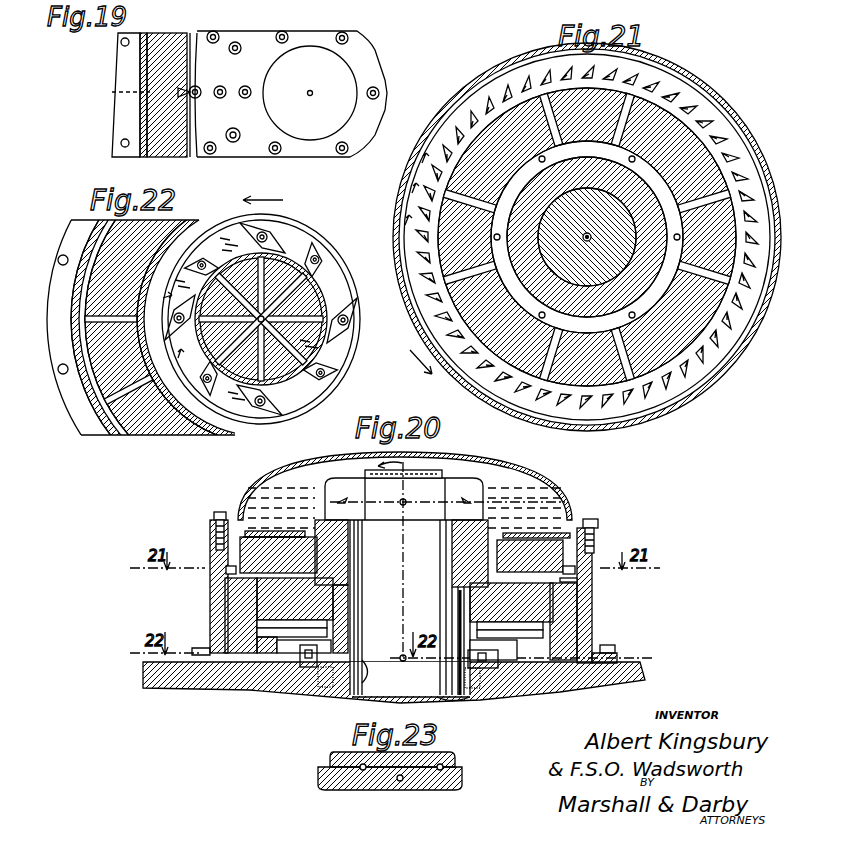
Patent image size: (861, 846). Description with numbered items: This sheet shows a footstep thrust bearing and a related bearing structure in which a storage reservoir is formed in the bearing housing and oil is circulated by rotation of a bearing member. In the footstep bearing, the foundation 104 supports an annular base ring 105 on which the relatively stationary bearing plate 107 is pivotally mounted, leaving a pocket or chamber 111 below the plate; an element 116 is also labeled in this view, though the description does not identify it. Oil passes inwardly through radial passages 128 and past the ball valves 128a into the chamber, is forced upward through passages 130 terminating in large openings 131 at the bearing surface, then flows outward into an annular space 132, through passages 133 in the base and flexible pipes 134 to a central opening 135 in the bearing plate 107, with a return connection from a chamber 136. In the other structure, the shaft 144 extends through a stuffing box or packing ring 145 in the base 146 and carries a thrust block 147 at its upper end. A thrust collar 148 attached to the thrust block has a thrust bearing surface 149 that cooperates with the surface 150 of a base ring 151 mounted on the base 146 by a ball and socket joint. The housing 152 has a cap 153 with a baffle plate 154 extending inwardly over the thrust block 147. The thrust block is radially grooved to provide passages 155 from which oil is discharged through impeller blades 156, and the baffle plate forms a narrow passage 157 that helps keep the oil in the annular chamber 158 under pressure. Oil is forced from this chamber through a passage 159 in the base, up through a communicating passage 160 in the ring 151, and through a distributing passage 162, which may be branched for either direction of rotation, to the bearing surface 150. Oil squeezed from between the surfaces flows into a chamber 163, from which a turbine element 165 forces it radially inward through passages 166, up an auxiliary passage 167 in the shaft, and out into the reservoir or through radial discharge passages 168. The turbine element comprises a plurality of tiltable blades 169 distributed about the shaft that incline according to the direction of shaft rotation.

In FIG. 19, the foundation 104 is at (502, 0).
In FIG. 19, the annular base ring 105 is at (147, 62).
In FIG. 19, the bearing plate 107 is at (310, 93).
In FIG. 19, the pocket or chamber 111 is at (470, 0).
In FIG. 19, the liner 116 is at (140, 80).
In FIG. 19, the radial passages 128 is at (300, 8).
In FIG. 19, the ball valves 128a is at (367, 13).
In FIG. 19, the passages 130 is at (244, 88).
In FIG. 19, the openings 131 is at (273, 153).
In FIG. 19, the annular space 132 is at (193, 45).
In FIG. 19, the passages 133 is at (270, 5).
In FIG. 19, the flexible pipes 134 is at (428, 0).
In FIG. 19, the central opening 135 is at (312, 93).
In FIG. 19, the chamber 136 is at (479, 26).
In FIG. 21, the shaft 144 is at (718, 336).
In FIG. 20, the shaft 144 is at (448, 700).
In FIG. 20, the stuffing box or packing ring 145 is at (500, 703).
In FIG. 22, the base 146 is at (93, 293).
In FIG. 20, the base 146 is at (563, 688).
In FIG. 20, the thrust block 147 is at (596, 531).
In FIG. 20, the thrust collar 148 is at (257, 598).
In FIG. 23, the thrust collar 148 is at (448, 776).
In FIG. 20, the thrust bearing surface 149 is at (270, 613).
In FIG. 20, the bearing surface 150 is at (263, 630).
In FIG. 22, the base ring 151 is at (137, 373).
In FIG. 20, the base ring 151 is at (316, 661).
In FIG. 23, the base ring 151 is at (358, 776).
In FIG. 21, the housing 152 is at (706, 102).
In FIG. 22, the housing 152 is at (113, 362).
In FIG. 20, the housing 152 is at (218, 548).
In FIG. 20, the cap 153 is at (258, 474).
In FIG. 22, the baffle plate 154 is at (261, 332).
In FIG. 20, the baffle plate 154 is at (263, 530).
In FIG. 21, the passages 155 is at (637, 213).
In FIG. 20, the passages 155 is at (233, 571).
In FIG. 21, the impeller blades 156 is at (427, 143).
In FIG. 20, the impeller blades 156 is at (596, 580).
In FIG. 20, the narrow passage 157 is at (238, 505).
In FIG. 20, the annular chamber 158 is at (225, 592).
In FIG. 22, the passage 159 is at (120, 410).
In FIG. 20, the passage 159 is at (275, 662).
In FIG. 20, the communicating passage 160 is at (300, 656).
In FIG. 20, the distributing passage 162 is at (427, 591).
In FIG. 23, the distributing passage 162 is at (401, 781).
In FIG. 20, the chamber 163 is at (333, 661).
In FIG. 22, the turbine element 165 is at (348, 337).
In FIG. 20, the turbine element 165 is at (311, 668).
In FIG. 22, the passages 166 is at (268, 290).
In FIG. 20, the passages 166 is at (370, 680).
In FIG. 21, the auxiliary passage 167 is at (590, 236).
In FIG. 22, the auxiliary passage 167 is at (277, 323).
In FIG. 20, the auxiliary passage 167 is at (405, 557).
In FIG. 20, the radial discharge passages 168 is at (488, 506).
In FIG. 22, the tiltable blades 169 is at (268, 246).
In FIG. 20, the tiltable blades 169 is at (410, 652).